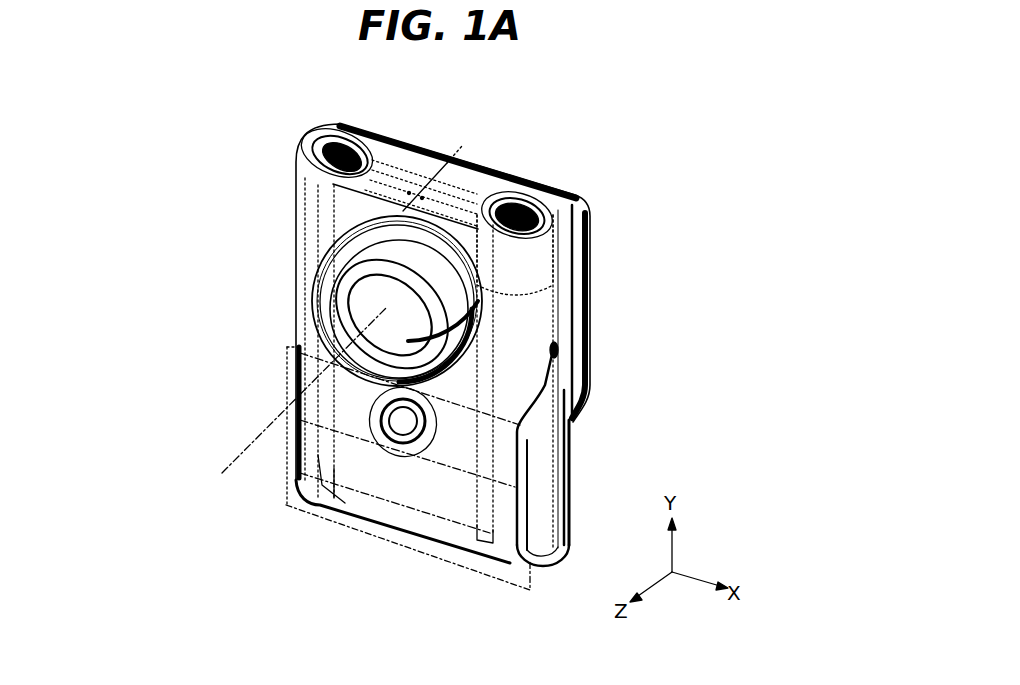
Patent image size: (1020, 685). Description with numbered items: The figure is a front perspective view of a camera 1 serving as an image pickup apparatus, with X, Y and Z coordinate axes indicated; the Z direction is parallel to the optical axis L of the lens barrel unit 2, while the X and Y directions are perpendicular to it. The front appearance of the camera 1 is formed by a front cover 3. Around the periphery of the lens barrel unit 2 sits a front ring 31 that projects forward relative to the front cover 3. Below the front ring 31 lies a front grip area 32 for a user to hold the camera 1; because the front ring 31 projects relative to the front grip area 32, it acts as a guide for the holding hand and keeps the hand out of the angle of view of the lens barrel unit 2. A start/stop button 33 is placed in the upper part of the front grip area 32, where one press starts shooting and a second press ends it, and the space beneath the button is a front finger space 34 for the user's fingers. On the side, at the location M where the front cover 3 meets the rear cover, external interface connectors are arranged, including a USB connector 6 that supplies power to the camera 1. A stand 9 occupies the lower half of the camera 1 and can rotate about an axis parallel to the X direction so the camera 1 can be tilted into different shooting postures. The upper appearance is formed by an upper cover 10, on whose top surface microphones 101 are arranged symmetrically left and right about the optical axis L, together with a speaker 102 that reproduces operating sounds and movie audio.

The camera 1 is at (146, 151).
The upper cover 10 is at (307, 207).
The front cover 3 is at (312, 242).
The lens barrel unit 2 is at (385, 308).
The front ring 31 is at (342, 319).
The front grip area 32 is at (285, 454).
The start/stop button 33 is at (403, 422).
The front finger space 34 is at (288, 511).
The microphones 101 is at (366, 150).
The speaker 102 is at (416, 192).
The location where the front cover and the rear cover meet M is at (556, 303).
The USB connector 6 is at (556, 352).
The stand 9 is at (556, 489).
The optical axis L is at (258, 453).